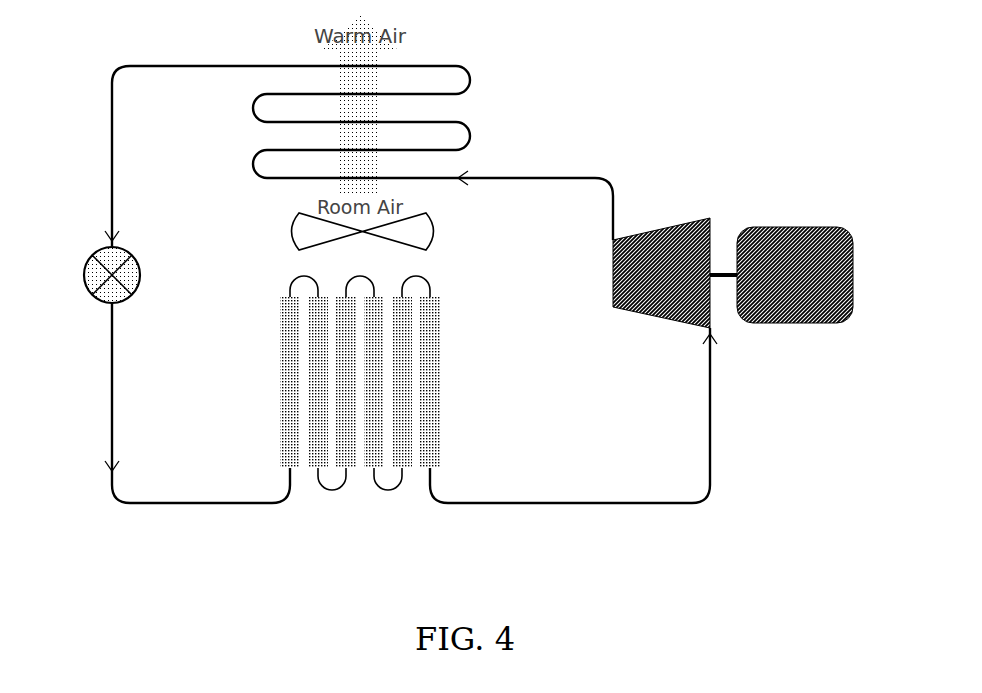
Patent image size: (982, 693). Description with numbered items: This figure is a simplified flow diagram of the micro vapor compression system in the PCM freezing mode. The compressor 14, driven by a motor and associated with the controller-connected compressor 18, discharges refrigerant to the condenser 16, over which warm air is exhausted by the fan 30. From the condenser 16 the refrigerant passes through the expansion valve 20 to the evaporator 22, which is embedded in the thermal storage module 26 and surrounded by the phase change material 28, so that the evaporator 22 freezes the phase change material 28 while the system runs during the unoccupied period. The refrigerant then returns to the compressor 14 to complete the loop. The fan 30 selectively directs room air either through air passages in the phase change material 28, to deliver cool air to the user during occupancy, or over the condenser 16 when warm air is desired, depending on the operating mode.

The compressor 14 is at (658, 230).
The condenser 16 is at (465, 70).
The compressor 18 is at (788, 230).
The expansion valve 20 is at (95, 293).
The evaporator 22 is at (381, 423).
The thermal storage module 26 is at (337, 495).
The phase change material 28 is at (279, 368).
The fan 30 is at (424, 214).